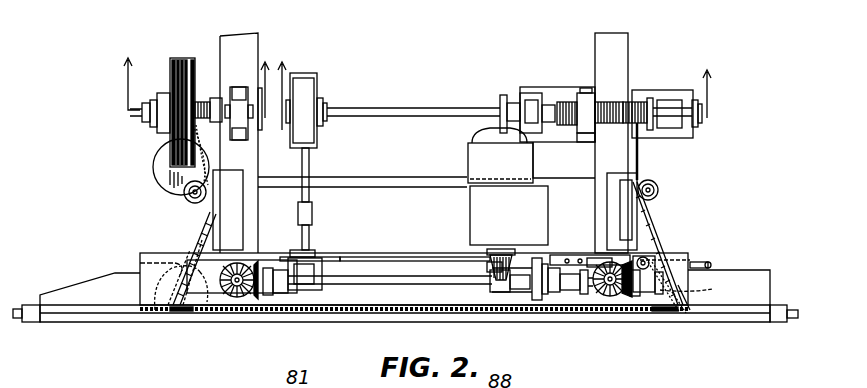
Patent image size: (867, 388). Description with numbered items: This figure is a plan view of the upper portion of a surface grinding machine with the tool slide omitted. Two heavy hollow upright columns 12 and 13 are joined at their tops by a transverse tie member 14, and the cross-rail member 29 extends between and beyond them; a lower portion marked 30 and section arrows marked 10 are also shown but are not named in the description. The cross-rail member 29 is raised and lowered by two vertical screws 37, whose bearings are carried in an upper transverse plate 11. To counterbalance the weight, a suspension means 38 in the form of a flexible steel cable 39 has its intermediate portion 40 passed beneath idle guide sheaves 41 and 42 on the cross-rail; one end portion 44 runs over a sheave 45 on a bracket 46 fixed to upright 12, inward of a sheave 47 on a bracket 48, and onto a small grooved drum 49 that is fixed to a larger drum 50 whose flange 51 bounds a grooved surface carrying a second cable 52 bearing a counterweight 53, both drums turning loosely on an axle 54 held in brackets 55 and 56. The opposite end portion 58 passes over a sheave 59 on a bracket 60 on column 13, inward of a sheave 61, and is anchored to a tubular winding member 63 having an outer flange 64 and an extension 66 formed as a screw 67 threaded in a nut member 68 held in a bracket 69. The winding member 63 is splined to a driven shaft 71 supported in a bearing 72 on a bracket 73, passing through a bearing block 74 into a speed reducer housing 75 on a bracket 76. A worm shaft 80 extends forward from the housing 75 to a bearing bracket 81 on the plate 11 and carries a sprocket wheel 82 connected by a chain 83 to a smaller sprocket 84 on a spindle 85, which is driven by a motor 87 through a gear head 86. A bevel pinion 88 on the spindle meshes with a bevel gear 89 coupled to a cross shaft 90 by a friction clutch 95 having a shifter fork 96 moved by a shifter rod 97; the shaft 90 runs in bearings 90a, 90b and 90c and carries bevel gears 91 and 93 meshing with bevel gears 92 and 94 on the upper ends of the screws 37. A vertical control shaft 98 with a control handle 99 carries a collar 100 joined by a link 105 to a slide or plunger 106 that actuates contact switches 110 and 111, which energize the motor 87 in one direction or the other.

The section line 10- 10 is at (502, 84).
The upper transverse plate 11 is at (430, 300).
The upright housing or column 12 is at (222, 38).
The upright housing or column 13 is at (615, 43).
The transverse tie member 14 is at (380, 190).
The cross-rail member 29 is at (90, 277).
The base 30 is at (113, 317).
The worm shaft or screw 37 is at (235, 299).
The sling or suspension means 38 is at (140, 262).
The flexible steel cable 39 is at (190, 248).
The intermediate portion of cable 40 is at (360, 313).
The idle supporting and guide sheave 41 is at (183, 305).
The idle supporting and guide sheave 42 is at (665, 300).
The end portion of cable 44 is at (195, 232).
The sheave 45 is at (162, 305).
The bracket 46 is at (205, 305).
The sheave 47 is at (190, 202).
The bracket 48 is at (213, 193).
The small grooved drum 49 is at (207, 99).
The large drum 50 is at (190, 60).
The flange of drum 51 is at (172, 75).
The second cable 52 is at (178, 155).
The counterweight 53 is at (165, 180).
The shaft or axle 54 is at (141, 112).
The bracket 55 is at (150, 103).
The bracket 56 is at (240, 87).
The opposite end portion of cable 58 is at (640, 158).
The sheave 59 is at (699, 290).
The bracket 60 is at (686, 307).
The sheave 61 is at (660, 192).
The tubular winding member or drum 63 is at (634, 102).
The flange 64 is at (652, 97).
The extension of winding member 66 is at (605, 100).
The worm or screw 67 is at (560, 100).
The nut member 68 is at (582, 142).
The bracket 69 is at (585, 90).
The driven shaft 71 is at (680, 127).
The bearing 72 is at (698, 125).
The bracket 73 is at (702, 95).
The bearing block 74 is at (530, 105).
The speed reducer housing 75 is at (322, 88).
The bracket 76 is at (292, 80).
The shaft 80 is at (308, 165).
The bearing bracket 81 is at (313, 270).
The sprocket wheel 82 is at (320, 257).
The endless sprocket chain 83 is at (380, 255).
The sprocket wheel 84 is at (490, 255).
The driving spindle 85 is at (505, 250).
The gear head 86 is at (480, 203).
The motor 87 is at (478, 158).
The bevel pinion 88 is at (487, 268).
The bevel gear 89 is at (500, 300).
The cross shaft 90 is at (387, 282).
The bearing 90a is at (300, 300).
The bearing 90b is at (490, 298).
The bearing 90c is at (556, 303).
The bevel gear 91 is at (625, 300).
The bevel gear 92 is at (575, 305).
The bevel gear 93 is at (267, 297).
The bevel gear 94 is at (246, 298).
The friction clutch 95 is at (540, 310).
The shifter fork 96 is at (553, 308).
The shifter rod 97 is at (640, 298).
The vertical control shaft 98 is at (650, 255).
The control handle 99 is at (705, 262).
The collar 100 is at (648, 280).
The link 105 is at (622, 262).
The shiftable slide or plunger 106 is at (598, 258).
The electrical contact switch 110 is at (557, 262).
The electrical contact switch 111 is at (595, 262).